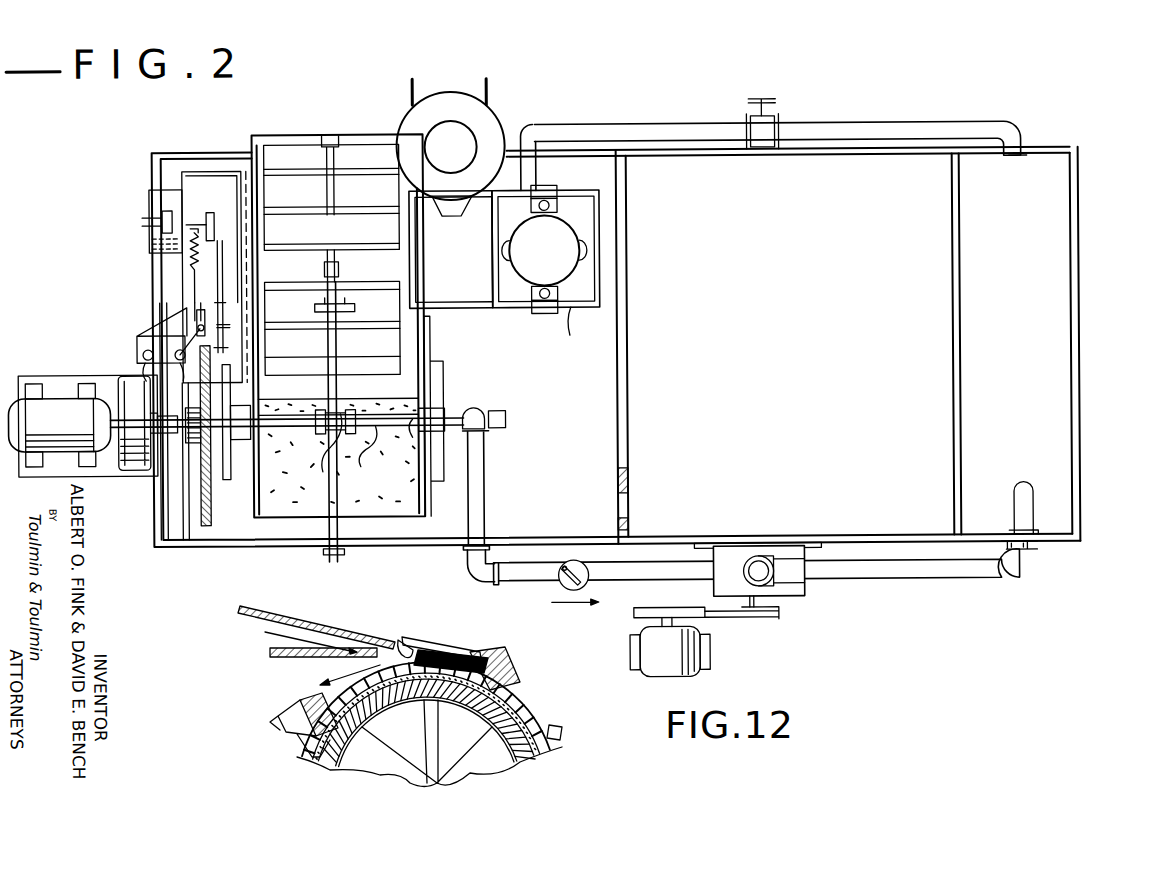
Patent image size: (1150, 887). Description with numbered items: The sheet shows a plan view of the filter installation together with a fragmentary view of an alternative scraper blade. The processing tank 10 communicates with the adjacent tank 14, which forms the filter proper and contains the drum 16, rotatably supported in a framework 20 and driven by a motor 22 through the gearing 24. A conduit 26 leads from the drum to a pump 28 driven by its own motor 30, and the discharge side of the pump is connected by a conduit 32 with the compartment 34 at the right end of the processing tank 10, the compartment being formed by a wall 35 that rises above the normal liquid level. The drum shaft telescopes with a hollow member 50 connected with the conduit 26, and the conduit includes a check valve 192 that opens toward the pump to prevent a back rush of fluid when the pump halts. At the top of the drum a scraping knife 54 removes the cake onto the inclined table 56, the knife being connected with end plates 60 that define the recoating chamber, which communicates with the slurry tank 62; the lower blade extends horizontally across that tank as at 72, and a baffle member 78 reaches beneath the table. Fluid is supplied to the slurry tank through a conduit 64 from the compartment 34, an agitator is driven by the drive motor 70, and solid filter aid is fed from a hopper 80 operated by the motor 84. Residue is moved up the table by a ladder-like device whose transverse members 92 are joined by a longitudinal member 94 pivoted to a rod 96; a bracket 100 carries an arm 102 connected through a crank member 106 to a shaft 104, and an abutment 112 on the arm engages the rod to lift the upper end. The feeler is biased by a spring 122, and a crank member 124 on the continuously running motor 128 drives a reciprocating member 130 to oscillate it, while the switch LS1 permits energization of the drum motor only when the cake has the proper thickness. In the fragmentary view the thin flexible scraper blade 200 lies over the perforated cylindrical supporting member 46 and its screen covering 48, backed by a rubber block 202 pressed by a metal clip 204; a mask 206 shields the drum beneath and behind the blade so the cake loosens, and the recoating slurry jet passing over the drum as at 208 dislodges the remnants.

In FIG. 2, the processing tank 10 is at (806, 378).
In FIG. 2, the adjacent tank 14 is at (515, 542).
In FIG. 2, the drum 16 is at (372, 512).
In FIG. 2, the framework 20 is at (216, 441).
In FIG. 2, the motor 22 is at (50, 395).
In FIG. 2, the gearing 24 is at (200, 453).
In FIG. 2, the conduit 26 is at (484, 455).
In FIG. 2, the pump 28 is at (790, 592).
In FIG. 2, the motor 30 is at (700, 672).
In FIG. 2, the conduit 32 is at (935, 580).
In FIG. 2, the compartment 34 is at (1079, 437).
In FIG. 2, the wall 35 is at (960, 395).
In FIG. 12, the cylindrical supporting member 46 is at (550, 749).
In FIG. 12, the cloth or screen 48 is at (562, 733).
In FIG. 2, the hollow member 50 is at (468, 407).
In FIG. 2, the scraping knife 54 is at (300, 400).
In FIG. 12, the inclined table 56 is at (365, 635).
In FIG. 2, the end plates 60 is at (258, 390).
In FIG. 2, the tank 62 is at (565, 335).
In FIG. 2, the conduit 64 is at (822, 125).
In FIG. 2, the drive motor 70 is at (578, 243).
In FIG. 2, the horizontal extension of lower scraper blade 72 is at (452, 262).
In FIG. 12, the horizontal partition or baffle member 78 is at (282, 657).
In FIG. 2, the hopper 80 is at (508, 131).
In FIG. 2, the motor 84 is at (473, 130).
In FIG. 2, the transverse members 92 is at (308, 290).
In FIG. 2, the longitudinal member 94 is at (306, 269).
In FIG. 2, the rod 96 is at (337, 160).
In FIG. 2, the bracket 100 is at (340, 268).
In FIG. 2, the arm 102 is at (343, 345).
In FIG. 2, the shaft 104 is at (377, 449).
In FIG. 2, the crank member 106 is at (367, 454).
In FIG. 2, the abutment 112 is at (355, 306).
In FIG. 2, the spring 122 is at (195, 258).
In FIG. 2, the crank member 124 is at (226, 198).
In FIG. 2, the motor 128 is at (150, 192).
In FIG. 2, the reciprocating member 130 is at (240, 224).
In FIG. 2, the check valve 192 is at (586, 587).
In FIG. 12, the scraper blade 200 is at (503, 650).
In FIG. 12, the rubber block 202 is at (470, 658).
In FIG. 12, the metal clip 204 is at (440, 645).
In FIG. 12, the mask 206 is at (453, 697).
In FIG. 12, the recoating slurry passage region 208 is at (405, 645).
In FIG. 2, the switch LS1 is at (137, 338).